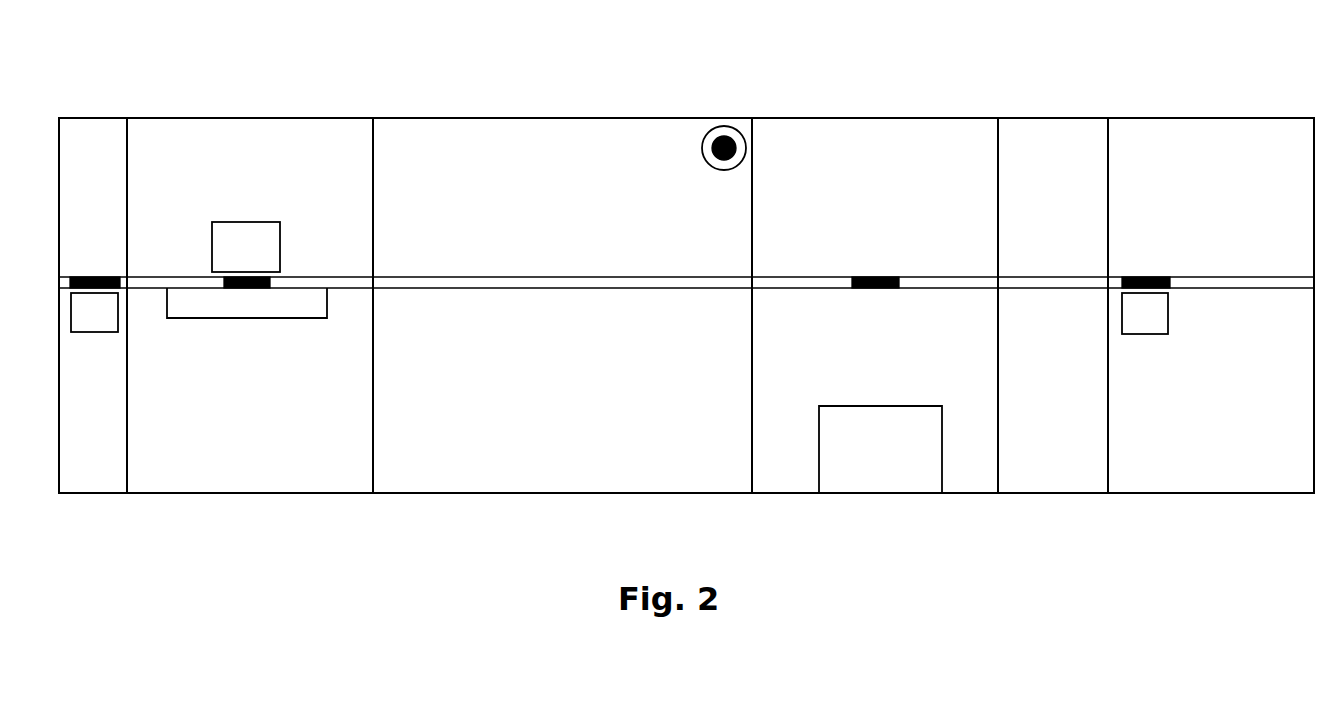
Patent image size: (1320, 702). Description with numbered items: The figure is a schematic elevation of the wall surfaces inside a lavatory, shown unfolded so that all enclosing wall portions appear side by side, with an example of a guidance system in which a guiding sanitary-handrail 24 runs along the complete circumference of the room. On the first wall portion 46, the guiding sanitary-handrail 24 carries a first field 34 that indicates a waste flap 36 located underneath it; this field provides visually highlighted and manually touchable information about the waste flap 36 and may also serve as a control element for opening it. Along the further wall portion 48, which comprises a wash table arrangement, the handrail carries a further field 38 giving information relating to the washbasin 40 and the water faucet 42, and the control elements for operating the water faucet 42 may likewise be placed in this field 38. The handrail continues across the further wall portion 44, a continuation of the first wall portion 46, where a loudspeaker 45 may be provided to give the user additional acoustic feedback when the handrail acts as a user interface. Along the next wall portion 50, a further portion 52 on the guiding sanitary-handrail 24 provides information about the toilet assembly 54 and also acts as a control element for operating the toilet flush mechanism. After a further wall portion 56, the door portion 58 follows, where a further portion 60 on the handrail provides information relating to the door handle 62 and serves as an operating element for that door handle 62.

The guiding sanitary-handrail 24 is at (147, 266).
The first field 34 is at (87, 277).
The waste flap 36 is at (107, 333).
The further field 38 is at (258, 275).
The washbasin 40 is at (296, 318).
The water faucet 42 is at (252, 222).
The further wall portion 44 is at (468, 108).
The loudspeaker 45 is at (722, 126).
The first wall portion 46 is at (94, 118).
The further wall portion 48 is at (231, 118).
The next wall portion 50 is at (861, 118).
The further portion 52 is at (858, 289).
The toilet assembly 54 is at (925, 405).
The further wall portion 56 is at (1054, 118).
The door portion 58 is at (1182, 118).
The further portion 60 is at (1142, 277).
The door handle 62 is at (1168, 313).